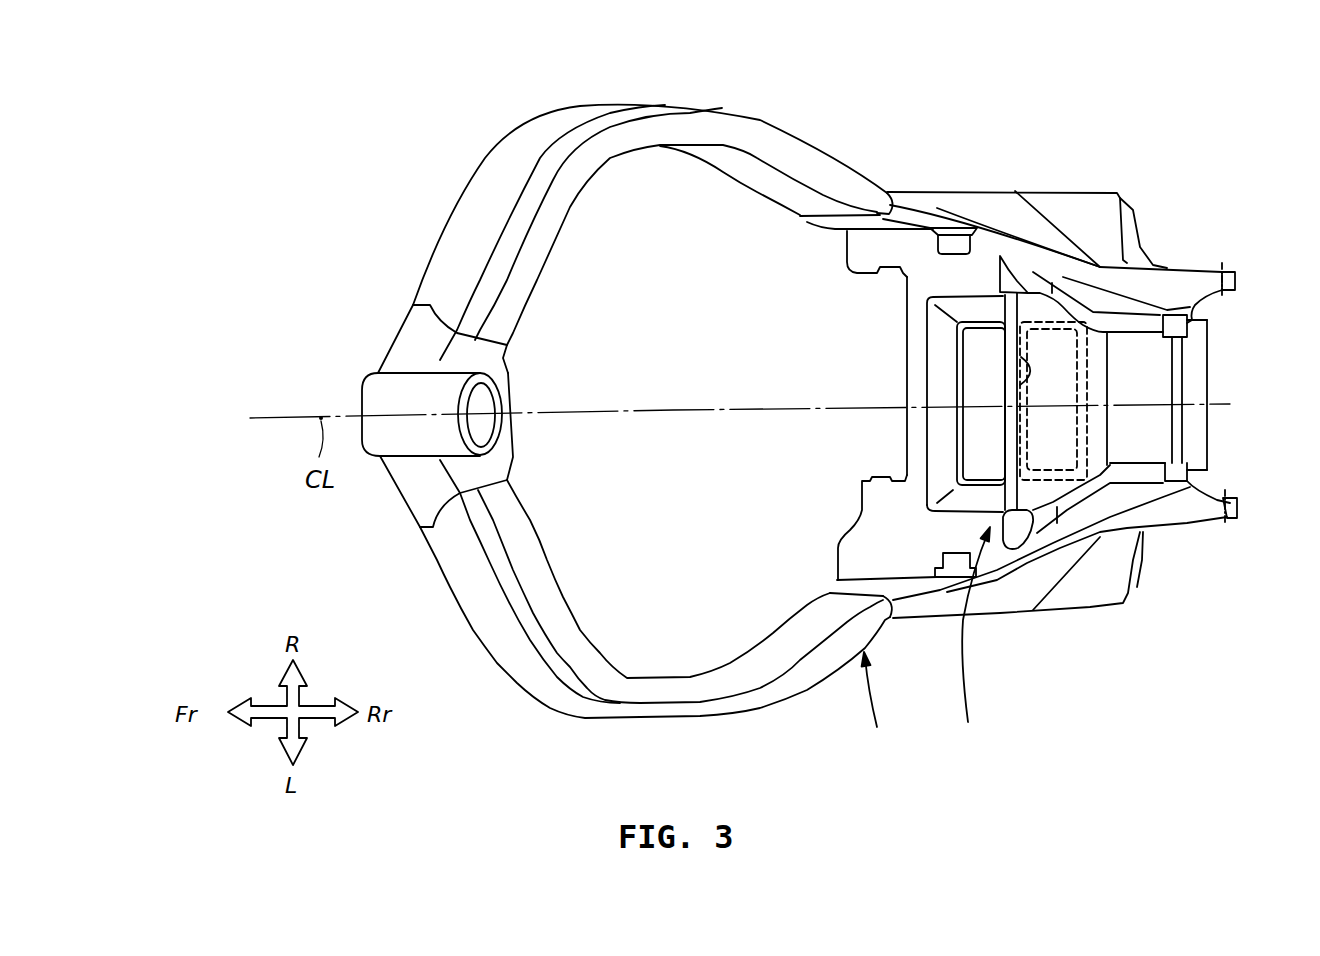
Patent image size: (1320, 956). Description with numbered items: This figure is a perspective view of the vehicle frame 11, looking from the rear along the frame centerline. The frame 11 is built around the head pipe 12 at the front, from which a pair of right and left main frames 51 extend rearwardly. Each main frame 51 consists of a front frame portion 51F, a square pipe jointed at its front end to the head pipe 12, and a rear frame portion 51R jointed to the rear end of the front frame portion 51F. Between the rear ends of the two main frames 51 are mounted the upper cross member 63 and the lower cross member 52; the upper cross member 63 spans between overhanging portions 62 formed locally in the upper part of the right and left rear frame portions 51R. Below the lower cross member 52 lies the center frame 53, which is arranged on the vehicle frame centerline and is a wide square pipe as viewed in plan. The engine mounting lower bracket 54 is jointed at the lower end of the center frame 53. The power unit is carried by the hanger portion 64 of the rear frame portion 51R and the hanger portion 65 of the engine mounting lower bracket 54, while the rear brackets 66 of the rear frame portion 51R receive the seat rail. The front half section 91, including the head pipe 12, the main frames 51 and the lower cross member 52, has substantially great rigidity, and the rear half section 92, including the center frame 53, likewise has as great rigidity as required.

The frame 11 is at (368, 160).
The head pipe 12 is at (373, 402).
The main frame 51 is at (485, 158).
The front frame portion 51F is at (542, 127).
The rear frame portion 51R is at (1008, 190).
The lower cross member 52 is at (993, 353).
The center frame 53 is at (1020, 380).
The engine mounting lower bracket 54 is at (908, 428).
The overhanging portion 62 is at (1183, 327).
The upper cross member 63 is at (1183, 376).
The hanger portion 64 is at (930, 248).
The hanger portion 65 is at (867, 278).
The rear bracket 66 is at (1235, 272).
The front half section 91 is at (880, 708).
The rear half section 92 is at (970, 645).